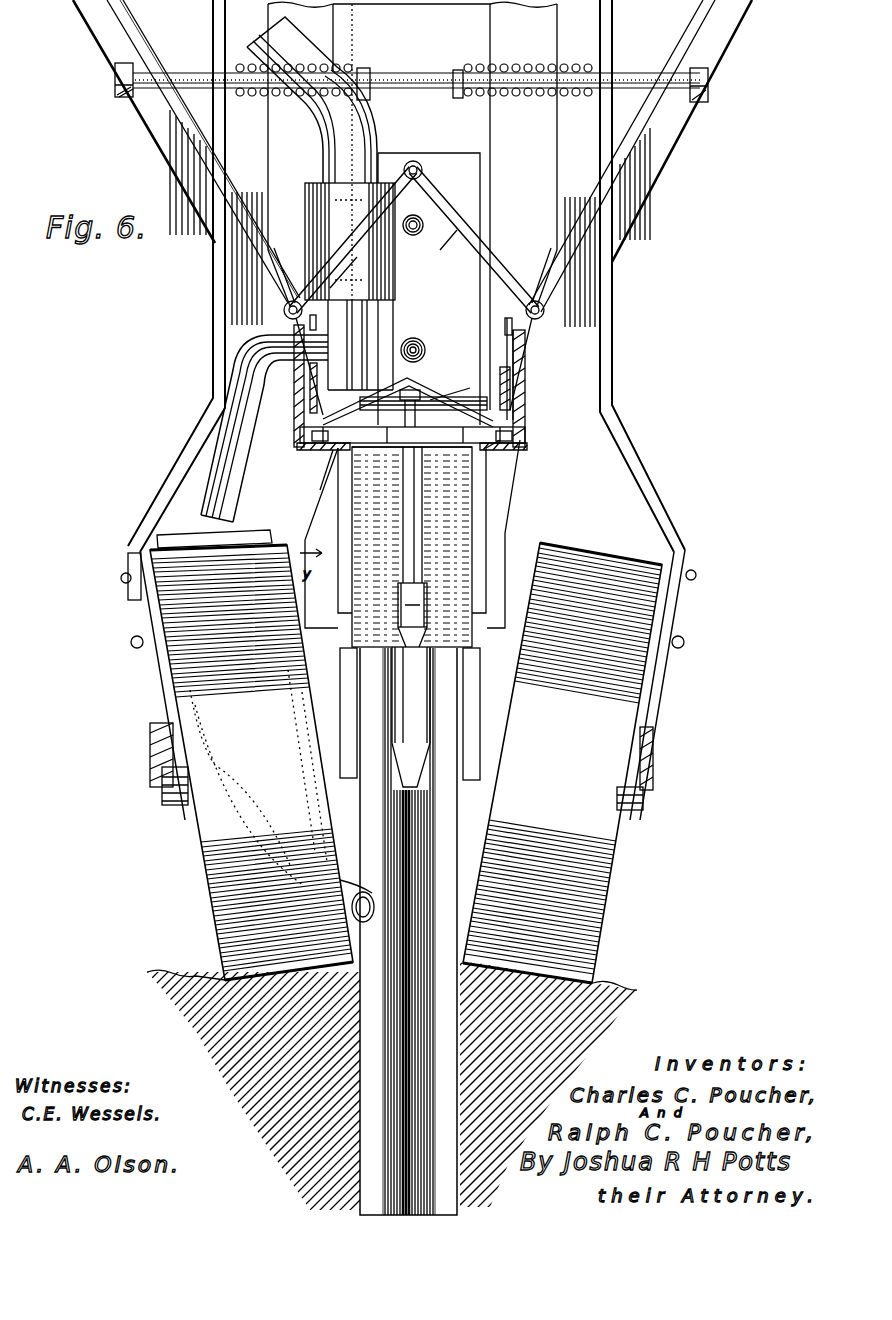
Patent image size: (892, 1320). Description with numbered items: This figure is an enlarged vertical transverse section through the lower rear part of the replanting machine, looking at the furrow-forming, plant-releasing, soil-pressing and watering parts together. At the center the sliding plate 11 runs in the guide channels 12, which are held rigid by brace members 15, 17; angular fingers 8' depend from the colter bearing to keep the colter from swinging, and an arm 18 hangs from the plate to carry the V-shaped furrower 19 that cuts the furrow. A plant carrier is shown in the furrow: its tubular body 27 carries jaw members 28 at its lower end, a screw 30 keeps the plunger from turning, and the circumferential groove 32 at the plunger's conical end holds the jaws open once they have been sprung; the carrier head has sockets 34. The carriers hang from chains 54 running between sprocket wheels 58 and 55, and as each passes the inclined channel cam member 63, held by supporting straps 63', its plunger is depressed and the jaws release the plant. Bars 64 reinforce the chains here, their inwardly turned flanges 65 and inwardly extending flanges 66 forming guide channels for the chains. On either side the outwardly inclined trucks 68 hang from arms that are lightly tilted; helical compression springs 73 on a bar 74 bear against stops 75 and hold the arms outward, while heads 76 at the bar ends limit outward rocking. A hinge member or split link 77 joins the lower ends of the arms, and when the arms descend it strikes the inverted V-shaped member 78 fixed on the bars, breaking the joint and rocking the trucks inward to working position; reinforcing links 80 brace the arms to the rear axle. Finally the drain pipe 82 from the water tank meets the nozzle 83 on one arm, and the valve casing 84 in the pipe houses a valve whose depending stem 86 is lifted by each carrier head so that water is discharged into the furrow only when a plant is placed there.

The angular fingers 8' is at (402, 533).
The plate 11 is at (462, 140).
The guide channels 12 is at (292, 124).
The brace member 15 is at (107, 35).
The brace member 17 is at (140, 32).
The arm 18 is at (445, 482).
The furrower 19 is at (408, 931).
The tubular body 27 is at (414, 543).
The jaw members 28 is at (400, 687).
The screw 30 is at (452, 500).
The circumferential groove 32 is at (430, 620).
The sockets 34 is at (423, 408).
The chains 54 is at (297, 440).
The sprocket wheels 55 is at (412, 438).
The sprocket wheels 58 is at (318, 322).
The inclined channel cam member 63 is at (407, 395).
The supporting straps 63' is at (451, 382).
The bars 64 is at (213, 113).
The inwardly turned flanges 65 is at (318, 448).
The inwardly extending flanges 66 is at (310, 400).
The trucks 68 is at (406, 756).
The helical compression springs 73 is at (362, 66).
The bar 74 is at (440, 90).
The stops 75 is at (455, 72).
The heads 76 is at (120, 96).
The hinge member or split link 77 is at (435, 208).
The inverted V-shaped member 78 is at (457, 230).
The reinforcing links 80 is at (150, 740).
The drain pipe 82 is at (358, 106).
The nozzle 83 is at (366, 892).
The valve casing 84 is at (350, 241).
The valve stem 86 is at (315, 528).